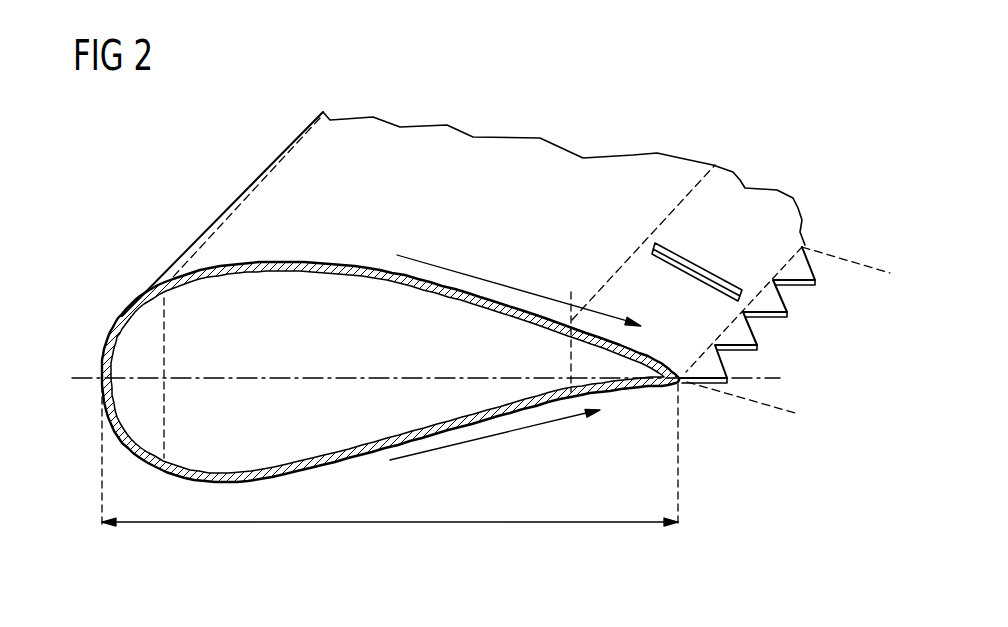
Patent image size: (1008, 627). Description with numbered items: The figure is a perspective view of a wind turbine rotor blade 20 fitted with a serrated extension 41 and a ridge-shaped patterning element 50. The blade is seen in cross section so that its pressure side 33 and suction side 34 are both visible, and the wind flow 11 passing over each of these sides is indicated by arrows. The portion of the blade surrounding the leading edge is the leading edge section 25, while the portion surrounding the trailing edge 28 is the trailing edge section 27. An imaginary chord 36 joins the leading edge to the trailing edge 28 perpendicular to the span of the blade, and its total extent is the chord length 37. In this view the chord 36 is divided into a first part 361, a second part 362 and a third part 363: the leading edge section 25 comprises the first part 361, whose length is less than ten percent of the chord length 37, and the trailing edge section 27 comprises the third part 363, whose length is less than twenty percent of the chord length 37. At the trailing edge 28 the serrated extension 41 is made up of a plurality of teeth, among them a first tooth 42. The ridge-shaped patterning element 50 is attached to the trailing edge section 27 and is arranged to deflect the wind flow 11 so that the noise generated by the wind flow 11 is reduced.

The wind turbine rotor blade 20 is at (160, 170).
The leading edge section 25 is at (263, 175).
The suction side 34 is at (488, 190).
The trailing edge section 27 is at (768, 198).
The ridge-shaped patterning element 50 is at (683, 263).
The trailing edge 28 is at (763, 278).
The first tooth 42 is at (752, 333).
The serrated extension 41 is at (812, 308).
The wind flow 11 is at (525, 283).
The pressure side 33 is at (355, 415).
The first part of the chord 361 is at (148, 377).
The second part of the chord 362 is at (322, 377).
The third part of the chord 363 is at (603, 395).
The chord 36 is at (767, 380).
The chord length 37 is at (405, 527).